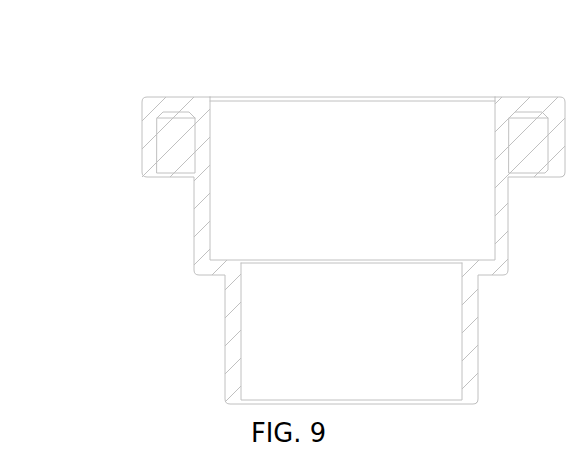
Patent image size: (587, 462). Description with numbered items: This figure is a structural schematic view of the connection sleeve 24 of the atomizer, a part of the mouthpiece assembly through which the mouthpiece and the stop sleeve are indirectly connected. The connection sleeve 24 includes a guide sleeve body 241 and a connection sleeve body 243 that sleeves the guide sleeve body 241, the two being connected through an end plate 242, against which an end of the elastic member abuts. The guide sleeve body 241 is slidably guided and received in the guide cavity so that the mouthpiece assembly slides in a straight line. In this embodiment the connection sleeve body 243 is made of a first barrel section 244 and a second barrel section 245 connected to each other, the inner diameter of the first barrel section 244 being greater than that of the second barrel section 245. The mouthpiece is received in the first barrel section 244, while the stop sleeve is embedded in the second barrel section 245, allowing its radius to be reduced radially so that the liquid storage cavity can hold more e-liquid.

The connection sleeve 24 is at (368, 35).
The guide sleeve body 241 is at (138, 148).
The end plate 242 is at (173, 103).
The connection sleeve body 243 is at (86, 212).
The first barrel section 244 is at (202, 243).
The second barrel section 245 is at (238, 338).